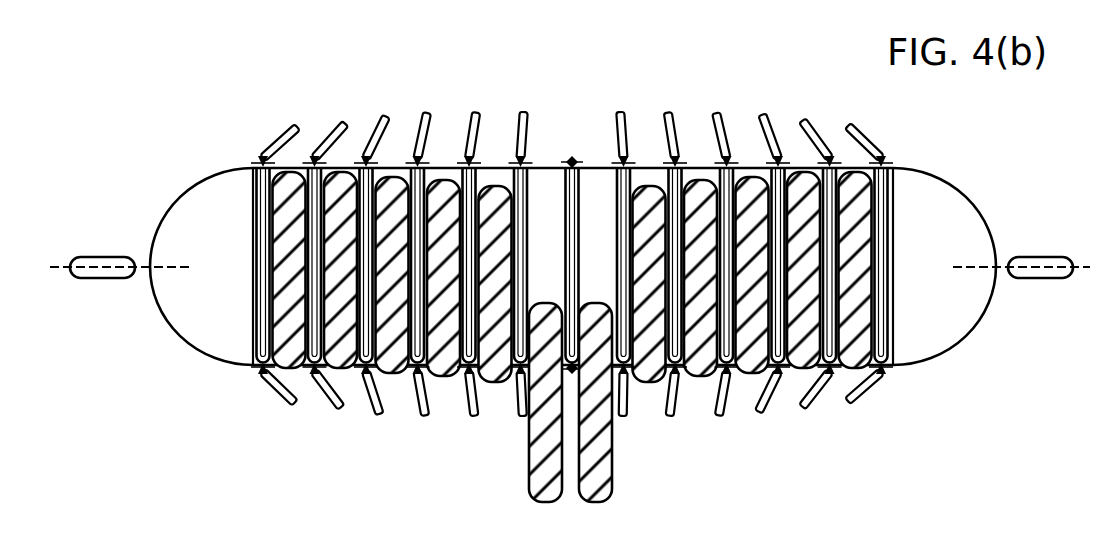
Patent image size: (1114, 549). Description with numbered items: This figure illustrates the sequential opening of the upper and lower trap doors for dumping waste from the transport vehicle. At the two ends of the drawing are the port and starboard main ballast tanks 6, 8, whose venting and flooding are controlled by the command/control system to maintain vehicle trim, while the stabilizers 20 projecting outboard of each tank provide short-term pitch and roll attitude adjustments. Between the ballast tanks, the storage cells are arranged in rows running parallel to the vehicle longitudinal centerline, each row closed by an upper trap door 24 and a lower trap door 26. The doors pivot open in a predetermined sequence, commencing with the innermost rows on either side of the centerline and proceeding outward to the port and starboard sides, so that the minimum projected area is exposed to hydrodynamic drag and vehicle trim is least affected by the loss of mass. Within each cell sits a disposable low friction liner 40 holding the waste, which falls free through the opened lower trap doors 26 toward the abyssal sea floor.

The port main ballast tank 6 is at (218, 247).
The starboard main ballast tank 8 is at (944, 235).
The stabilizer 20 is at (108, 278).
The upper trap door 24 is at (864, 132).
The lower trap door 26 is at (337, 399).
The disposable low friction liner 40 is at (610, 440).